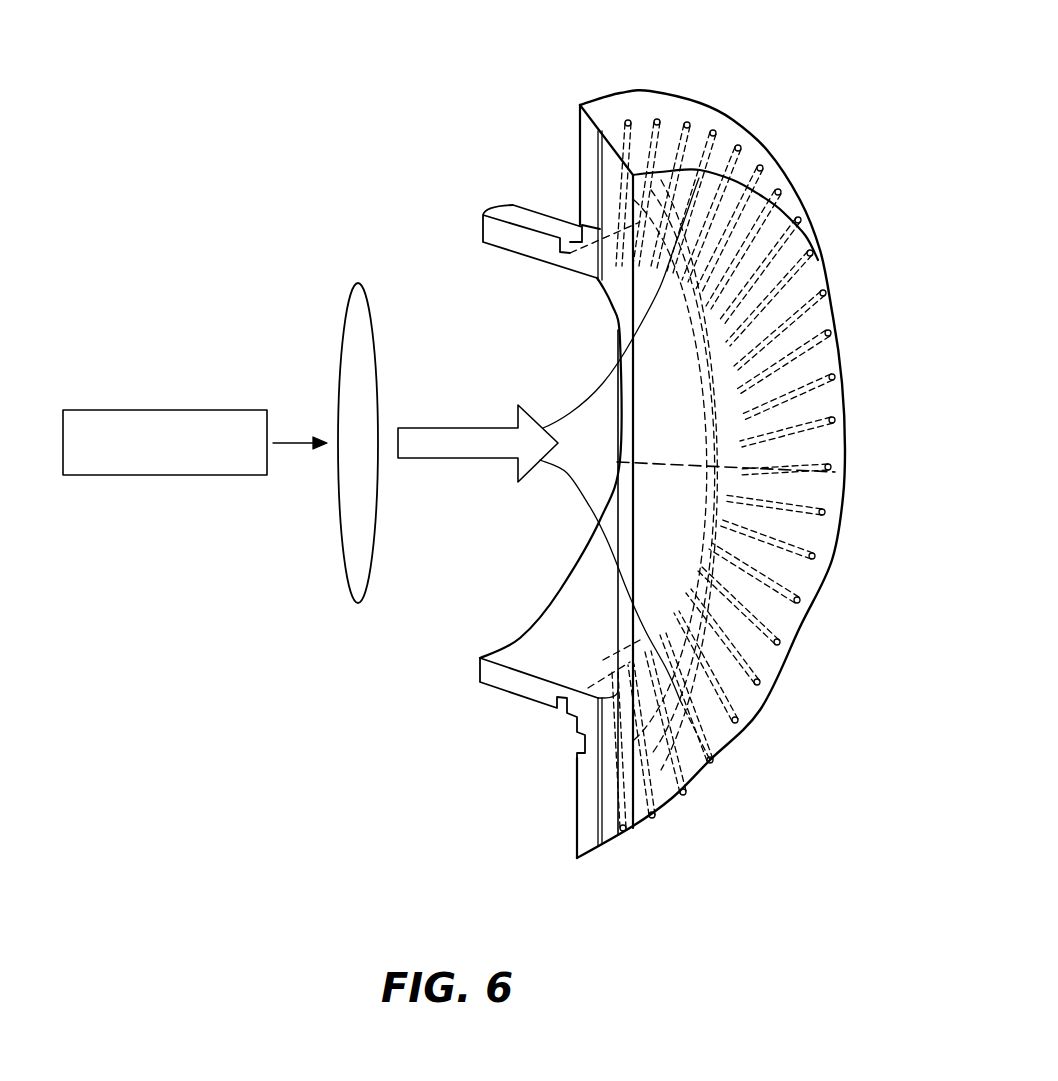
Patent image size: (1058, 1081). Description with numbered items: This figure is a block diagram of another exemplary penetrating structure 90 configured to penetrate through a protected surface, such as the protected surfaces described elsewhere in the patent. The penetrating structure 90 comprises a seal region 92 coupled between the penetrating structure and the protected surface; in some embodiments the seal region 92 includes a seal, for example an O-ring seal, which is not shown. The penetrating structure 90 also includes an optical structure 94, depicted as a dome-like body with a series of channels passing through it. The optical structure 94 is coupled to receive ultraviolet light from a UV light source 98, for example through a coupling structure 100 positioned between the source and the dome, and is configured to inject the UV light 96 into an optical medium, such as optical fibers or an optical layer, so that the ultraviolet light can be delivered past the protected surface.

The penetrating structure 90 is at (693, 103).
The seal region 92 is at (581, 217).
The optical structure 94 is at (697, 723).
The UV light 96 is at (452, 428).
The UV light source 98 is at (162, 410).
The coupling structure 100 is at (340, 332).